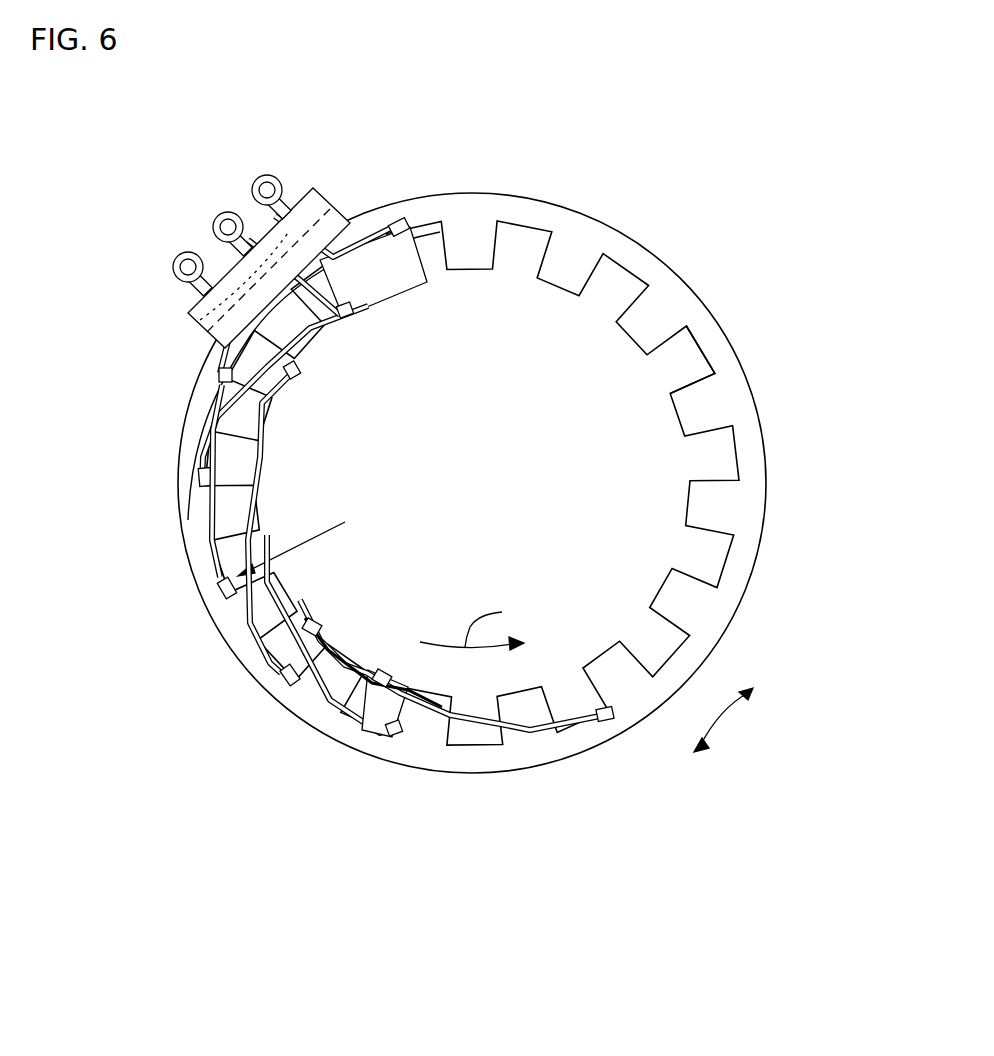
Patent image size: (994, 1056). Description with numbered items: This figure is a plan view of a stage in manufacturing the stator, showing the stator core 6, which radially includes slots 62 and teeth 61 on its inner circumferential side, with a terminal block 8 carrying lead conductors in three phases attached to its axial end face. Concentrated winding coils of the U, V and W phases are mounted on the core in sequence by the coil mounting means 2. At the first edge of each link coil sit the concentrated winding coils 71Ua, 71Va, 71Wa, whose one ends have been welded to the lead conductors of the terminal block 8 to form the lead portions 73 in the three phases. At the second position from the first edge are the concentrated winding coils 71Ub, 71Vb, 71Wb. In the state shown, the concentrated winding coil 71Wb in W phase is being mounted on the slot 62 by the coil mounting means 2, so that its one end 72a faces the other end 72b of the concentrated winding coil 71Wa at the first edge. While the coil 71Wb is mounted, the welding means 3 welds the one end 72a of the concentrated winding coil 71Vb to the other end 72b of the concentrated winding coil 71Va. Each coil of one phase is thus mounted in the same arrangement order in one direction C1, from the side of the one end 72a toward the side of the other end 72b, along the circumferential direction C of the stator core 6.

The coil mounting means 2 is at (368, 629).
The welding means 3 is at (318, 532).
The stator core 6 is at (626, 742).
The terminal block 8 is at (336, 213).
The teeth 61 is at (655, 318).
The slots 62 is at (706, 352).
The concentrated winding coil in U phase 71Ua is at (365, 265).
The concentrated winding coil in V phase 71Va is at (275, 345).
The concentrated winding coil in W phase 71Wa is at (233, 440).
The concentrated winding coil in U phase 71Ub is at (240, 532).
The concentrated winding coil in V phase 71Vb is at (292, 615).
The concentrated winding coil in W phase 71Wb is at (352, 697).
The one end 72a is at (262, 600).
The other end 72b is at (237, 606).
The lead portion 73 is at (212, 203).
The one direction C1 is at (478, 625).
The circumferential direction C is at (723, 724).